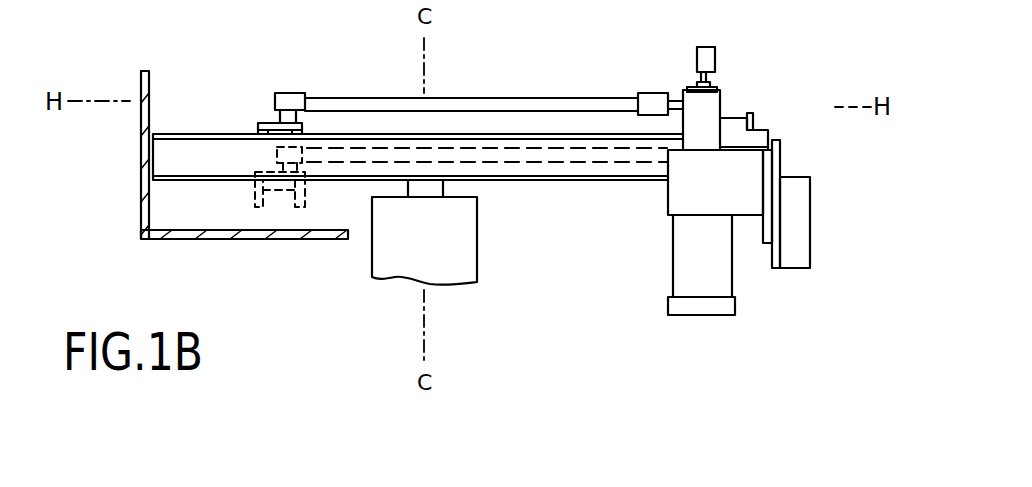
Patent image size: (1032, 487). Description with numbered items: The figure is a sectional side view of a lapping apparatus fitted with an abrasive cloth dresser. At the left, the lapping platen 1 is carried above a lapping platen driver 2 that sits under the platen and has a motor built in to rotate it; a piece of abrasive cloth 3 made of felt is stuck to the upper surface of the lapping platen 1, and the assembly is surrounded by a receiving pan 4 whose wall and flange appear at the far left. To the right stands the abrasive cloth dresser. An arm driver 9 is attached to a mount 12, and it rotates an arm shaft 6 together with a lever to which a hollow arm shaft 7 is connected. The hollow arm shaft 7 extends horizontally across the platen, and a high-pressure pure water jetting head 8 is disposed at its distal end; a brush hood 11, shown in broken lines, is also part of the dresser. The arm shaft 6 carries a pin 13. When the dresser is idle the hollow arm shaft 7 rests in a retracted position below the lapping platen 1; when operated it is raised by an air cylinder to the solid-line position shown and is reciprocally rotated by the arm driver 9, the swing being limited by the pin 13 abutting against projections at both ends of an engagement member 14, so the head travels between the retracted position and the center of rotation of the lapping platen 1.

The lapping platen 1 is at (173, 150).
The lapping platen driver 2 is at (468, 222).
The abrasive cloth 3 is at (200, 132).
The receiving pan 4 is at (140, 93).
The arm shaft 6 is at (721, 107).
The hollow arm shaft 7 is at (519, 96).
The high-pressure pure water jetting head 8 is at (307, 113).
The arm driver 9 is at (657, 228).
The brush hood 11 is at (258, 127).
The mount 12 is at (802, 212).
The pin 13 is at (752, 112).
The engagement member 14 is at (773, 127).